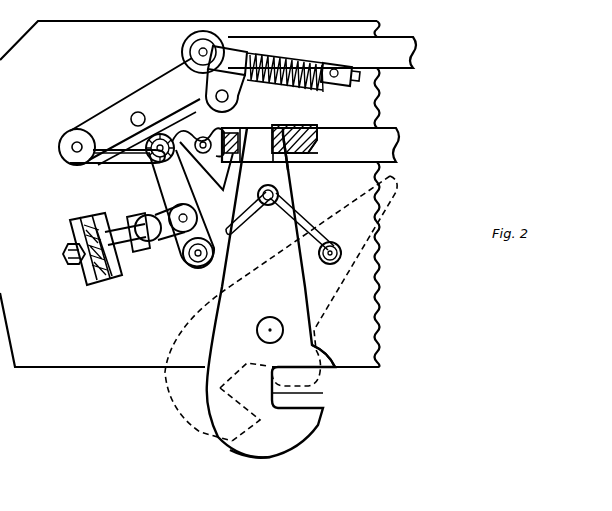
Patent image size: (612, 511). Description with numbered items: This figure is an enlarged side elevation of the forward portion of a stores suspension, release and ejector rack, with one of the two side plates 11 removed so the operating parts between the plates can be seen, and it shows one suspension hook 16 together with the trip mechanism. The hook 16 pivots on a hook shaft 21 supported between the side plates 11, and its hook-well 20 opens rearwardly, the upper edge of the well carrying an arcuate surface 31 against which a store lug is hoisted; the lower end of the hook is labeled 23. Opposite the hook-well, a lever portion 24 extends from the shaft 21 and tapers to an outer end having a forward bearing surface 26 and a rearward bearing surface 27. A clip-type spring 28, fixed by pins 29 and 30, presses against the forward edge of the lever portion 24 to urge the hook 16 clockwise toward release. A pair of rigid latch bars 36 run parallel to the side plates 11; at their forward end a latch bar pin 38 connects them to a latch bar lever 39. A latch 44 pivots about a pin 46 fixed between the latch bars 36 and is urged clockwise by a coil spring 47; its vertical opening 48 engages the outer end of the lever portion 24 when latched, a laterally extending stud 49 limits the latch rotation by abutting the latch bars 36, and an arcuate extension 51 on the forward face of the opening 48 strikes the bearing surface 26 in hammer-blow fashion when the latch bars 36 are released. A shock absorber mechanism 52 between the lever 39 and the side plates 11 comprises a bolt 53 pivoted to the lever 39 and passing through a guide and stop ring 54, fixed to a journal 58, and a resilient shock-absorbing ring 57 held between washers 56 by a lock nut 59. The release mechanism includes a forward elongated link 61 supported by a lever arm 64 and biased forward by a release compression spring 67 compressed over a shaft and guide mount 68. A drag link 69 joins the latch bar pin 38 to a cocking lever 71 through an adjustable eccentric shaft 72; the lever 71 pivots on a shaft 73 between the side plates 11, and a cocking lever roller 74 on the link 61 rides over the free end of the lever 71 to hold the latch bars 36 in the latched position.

The side plates 11 is at (70, 372).
The suspension hook 16 is at (208, 331).
The hook-well 20 is at (315, 393).
The hook shaft 21 is at (272, 318).
The lower end of hook 23 is at (252, 449).
The lever portion 24 is at (220, 292).
The forward bearing surface 26 is at (245, 130).
The rearward bearing surface 27 is at (283, 160).
The clip-type spring 28 is at (283, 220).
The pin 29 is at (330, 246).
The pin 30 is at (278, 195).
The arcuate surface 31 is at (322, 363).
The latch bars 36 is at (398, 128).
The latch bar pin 38 is at (124, 178).
The latch bar lever 39 is at (167, 190).
The latch 44 is at (314, 156).
The latch pin 46 is at (197, 128).
The coil spring 47 is at (152, 178).
The vertical opening 48 is at (272, 126).
The stud 49 is at (311, 127).
The arcuate extension 51 is at (228, 187).
The shock absorber mechanism 52 is at (73, 232).
The bolt 53 is at (133, 250).
The guide and stop ring 54 is at (147, 250).
The washers 56 is at (104, 283).
The resilient shock-absorbing ring 57 is at (88, 280).
The journal 58 is at (143, 222).
The lock nut 59 is at (66, 262).
The forward elongated link 61 is at (405, 40).
The lever arm 64 is at (238, 82).
The release compression spring 67 is at (280, 61).
The shaft and guide mount 68 is at (337, 72).
The drag link 69 is at (123, 156).
The cocking lever 71 is at (157, 95).
The eccentric shaft 72 is at (64, 158).
The shaft 73 is at (133, 116).
The cocking lever roller 74 is at (188, 43).